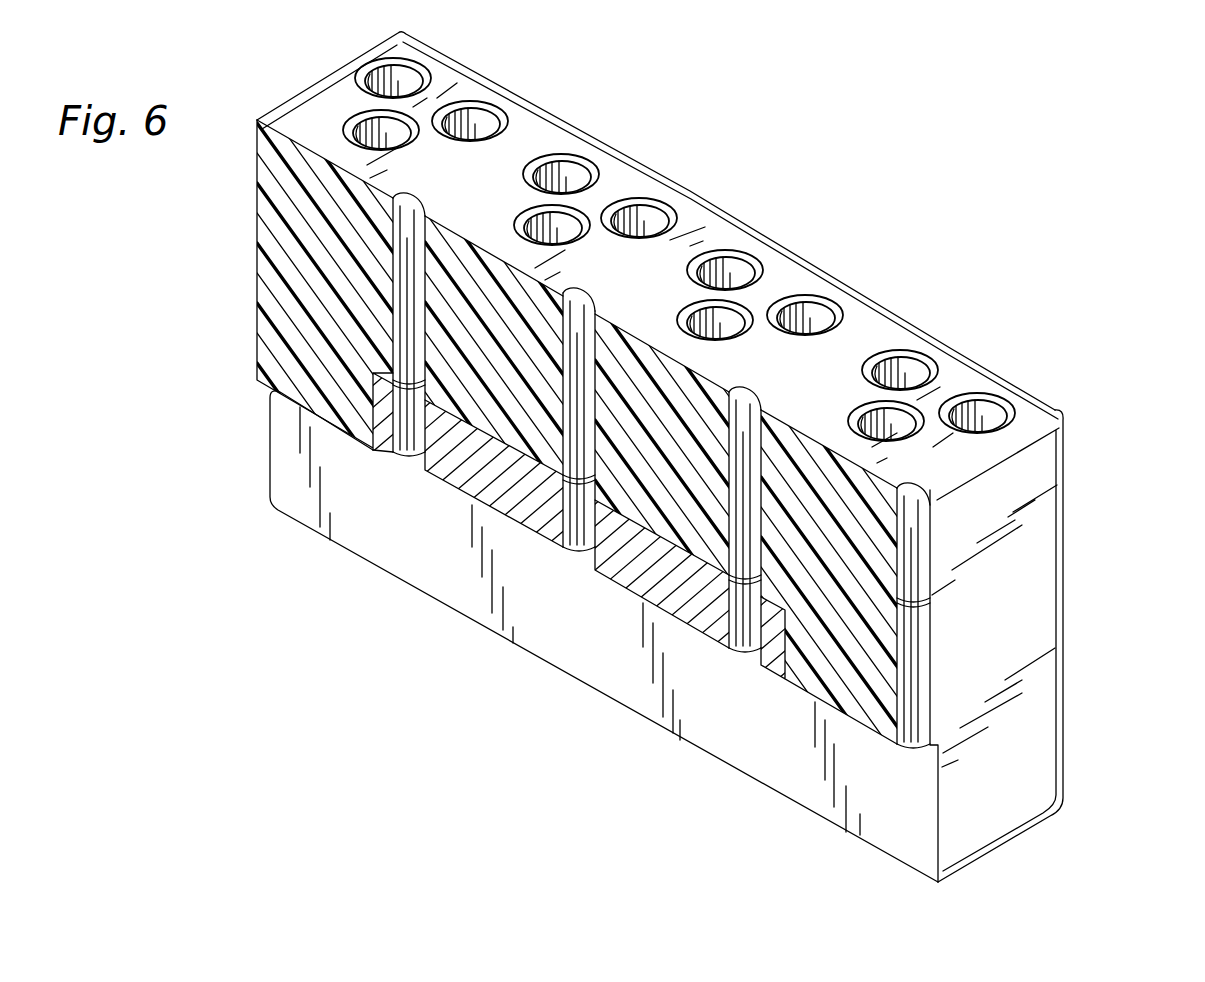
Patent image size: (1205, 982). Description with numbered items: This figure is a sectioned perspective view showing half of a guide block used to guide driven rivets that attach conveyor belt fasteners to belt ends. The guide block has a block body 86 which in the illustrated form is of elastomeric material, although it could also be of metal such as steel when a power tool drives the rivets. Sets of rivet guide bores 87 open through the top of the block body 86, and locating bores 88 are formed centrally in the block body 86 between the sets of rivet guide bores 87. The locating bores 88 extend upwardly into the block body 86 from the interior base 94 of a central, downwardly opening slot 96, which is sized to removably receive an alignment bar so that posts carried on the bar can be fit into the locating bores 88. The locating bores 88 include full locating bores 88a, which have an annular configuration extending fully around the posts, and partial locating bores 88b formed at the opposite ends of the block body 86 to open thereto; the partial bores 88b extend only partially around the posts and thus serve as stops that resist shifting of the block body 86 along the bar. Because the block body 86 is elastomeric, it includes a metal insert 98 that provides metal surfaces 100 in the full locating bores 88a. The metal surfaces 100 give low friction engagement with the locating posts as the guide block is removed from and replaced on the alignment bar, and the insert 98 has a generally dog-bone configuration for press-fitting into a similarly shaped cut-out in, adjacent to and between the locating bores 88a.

The block body 86 is at (280, 203).
The rivet guide bores 87 is at (655, 215).
The locating bores 88 is at (407, 287).
The full locating bores 88a is at (758, 403).
The partial locating bores 88b is at (921, 603).
The interior base 94 is at (800, 693).
The slot 96 is at (905, 825).
The metal insert 98 is at (635, 585).
The metal surfaces 100 is at (577, 547).